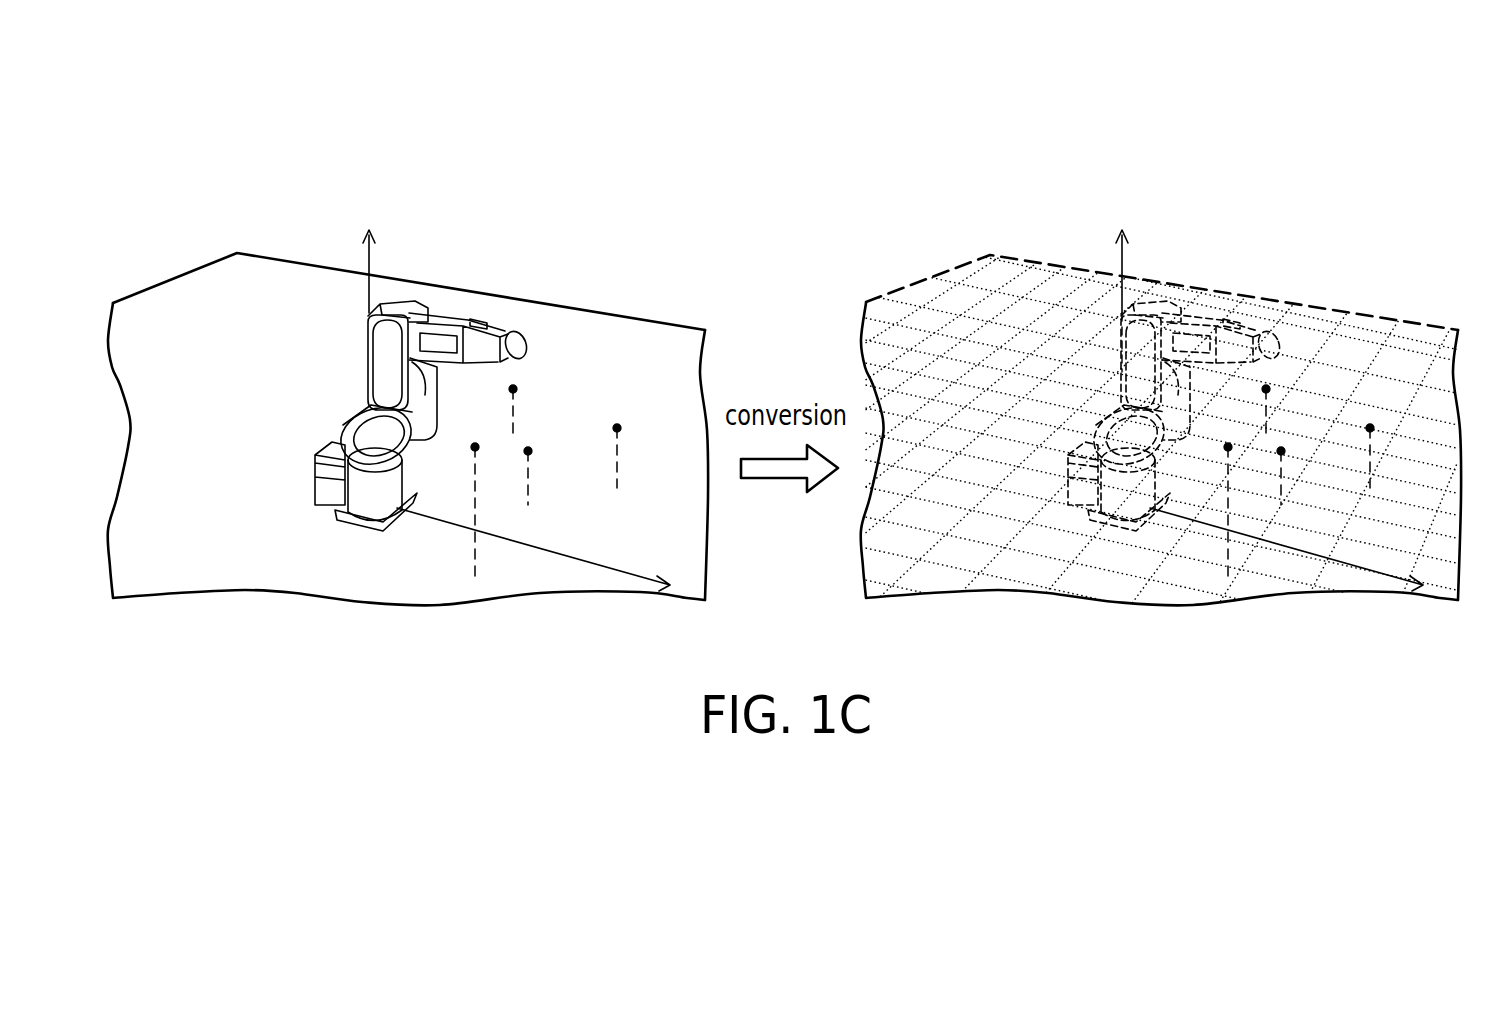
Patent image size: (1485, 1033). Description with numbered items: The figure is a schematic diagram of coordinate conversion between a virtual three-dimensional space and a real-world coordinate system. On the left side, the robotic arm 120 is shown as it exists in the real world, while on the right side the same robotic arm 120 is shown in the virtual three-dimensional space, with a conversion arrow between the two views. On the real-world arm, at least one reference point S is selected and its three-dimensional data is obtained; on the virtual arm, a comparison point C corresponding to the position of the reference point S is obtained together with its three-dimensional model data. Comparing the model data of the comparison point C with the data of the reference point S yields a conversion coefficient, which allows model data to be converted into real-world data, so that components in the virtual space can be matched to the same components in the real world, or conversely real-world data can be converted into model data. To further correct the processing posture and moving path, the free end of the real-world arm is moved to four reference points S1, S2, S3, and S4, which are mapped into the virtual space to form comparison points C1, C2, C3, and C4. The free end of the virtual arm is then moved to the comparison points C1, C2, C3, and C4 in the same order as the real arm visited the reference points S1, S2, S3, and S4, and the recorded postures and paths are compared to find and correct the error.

The robotic arm 120 is at (408, 397).
The reference point S is at (315, 456).
The first reference point S1 is at (475, 447).
The second reference point S2 is at (528, 451).
The third reference point S3 is at (617, 428).
The fourth reference point S4 is at (513, 389).
The comparison point C is at (1068, 456).
The first comparison point C1 is at (1228, 447).
The second comparison point C2 is at (1281, 451).
The third comparison point C3 is at (1370, 428).
The fourth comparison point C4 is at (1266, 389).